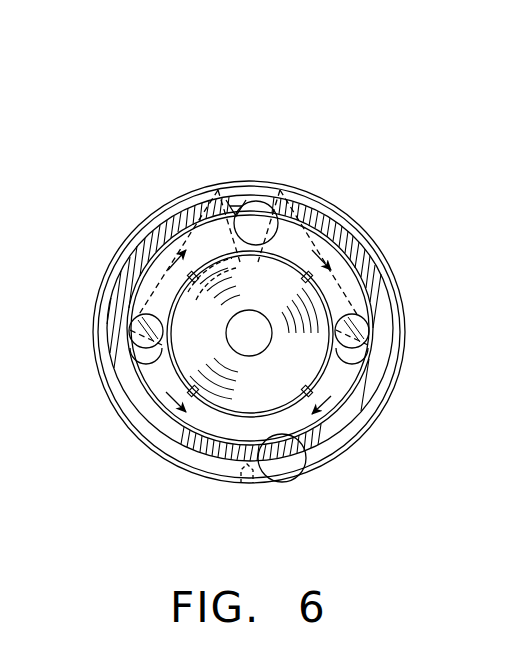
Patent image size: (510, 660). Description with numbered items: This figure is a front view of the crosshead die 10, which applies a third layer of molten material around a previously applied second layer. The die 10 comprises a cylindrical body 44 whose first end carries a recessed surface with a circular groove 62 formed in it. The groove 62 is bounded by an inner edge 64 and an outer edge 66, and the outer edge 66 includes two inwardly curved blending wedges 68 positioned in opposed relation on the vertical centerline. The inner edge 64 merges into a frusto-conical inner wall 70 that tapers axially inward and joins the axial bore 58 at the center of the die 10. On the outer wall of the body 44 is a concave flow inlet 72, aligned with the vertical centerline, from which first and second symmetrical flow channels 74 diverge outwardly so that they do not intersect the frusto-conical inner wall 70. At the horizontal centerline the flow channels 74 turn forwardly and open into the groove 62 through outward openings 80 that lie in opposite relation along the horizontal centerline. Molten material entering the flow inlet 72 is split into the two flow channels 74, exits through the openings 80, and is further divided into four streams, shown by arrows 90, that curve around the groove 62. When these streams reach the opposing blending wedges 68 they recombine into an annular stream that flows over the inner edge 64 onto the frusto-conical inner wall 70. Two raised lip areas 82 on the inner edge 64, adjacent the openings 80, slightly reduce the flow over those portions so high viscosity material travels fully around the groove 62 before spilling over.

The crosshead die 10 is at (292, 106).
The cylindrical body 44 is at (110, 428).
The axial bore 58 is at (345, 402).
The circular groove 62 is at (178, 430).
The inner edge 64 is at (184, 446).
The outer edge 66 is at (256, 478).
The blending wedges 68 is at (302, 212).
The frusto-conical inner wall 70 is at (292, 298).
The flow inlet 72 is at (235, 208).
The flow channels 74 is at (190, 208).
The outward openings 80 is at (130, 325).
The raised lip areas 82 is at (135, 356).
The arrows 90 is at (170, 268).